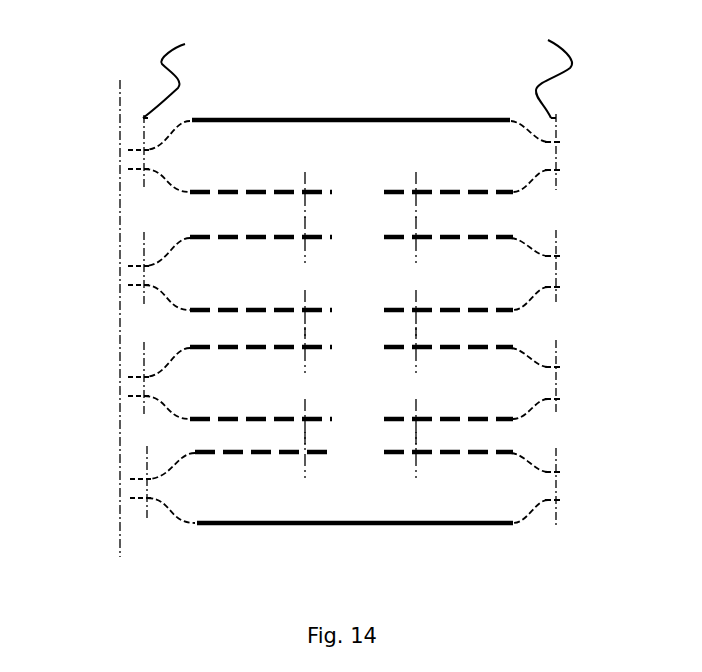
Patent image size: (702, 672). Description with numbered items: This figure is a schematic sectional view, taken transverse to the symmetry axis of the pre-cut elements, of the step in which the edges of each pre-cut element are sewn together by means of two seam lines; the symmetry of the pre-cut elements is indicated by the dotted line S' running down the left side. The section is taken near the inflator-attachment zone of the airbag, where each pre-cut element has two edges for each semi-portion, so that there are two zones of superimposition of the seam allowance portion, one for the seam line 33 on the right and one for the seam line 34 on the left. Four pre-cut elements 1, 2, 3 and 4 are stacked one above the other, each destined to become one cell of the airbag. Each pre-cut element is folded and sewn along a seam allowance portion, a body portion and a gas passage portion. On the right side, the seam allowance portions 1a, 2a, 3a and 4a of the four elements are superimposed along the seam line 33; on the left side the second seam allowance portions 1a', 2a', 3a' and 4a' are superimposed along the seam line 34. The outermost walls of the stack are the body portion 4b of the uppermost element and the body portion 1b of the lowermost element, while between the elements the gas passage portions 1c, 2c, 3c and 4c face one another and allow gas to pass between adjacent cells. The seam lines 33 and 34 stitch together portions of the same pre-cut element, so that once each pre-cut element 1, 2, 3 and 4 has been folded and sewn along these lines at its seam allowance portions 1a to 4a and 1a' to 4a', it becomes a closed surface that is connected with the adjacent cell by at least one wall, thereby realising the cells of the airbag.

The dotted line representing pre-cut element symmetry S' is at (103, 303).
The seam line 34 is at (182, 67).
The seam line 33 is at (542, 67).
The pre-cut element 4 is at (329, 151).
The seam allowance portion 4a is at (564, 153).
The seam allowance portion 4a' is at (168, 153).
The body portion 4b is at (351, 102).
The gas passage portion 4c is at (351, 179).
The pre-cut element 3 is at (329, 276).
The seam allowance portion 3a is at (564, 270).
The seam allowance portion 3a' is at (166, 271).
The gas passage portion 3c is at (351, 276).
The pre-cut element 2 is at (329, 386).
The seam allowance portion 2a is at (564, 379).
The seam allowance portion 2a' is at (168, 380).
The gas passage portion 2c is at (351, 386).
The pre-cut element 1 is at (328, 496).
The seam allowance portion 1a is at (563, 486).
The seam allowance portion 1a' is at (171, 484).
The gas passage portion 1c is at (354, 460).
The body portion 1b is at (355, 542).